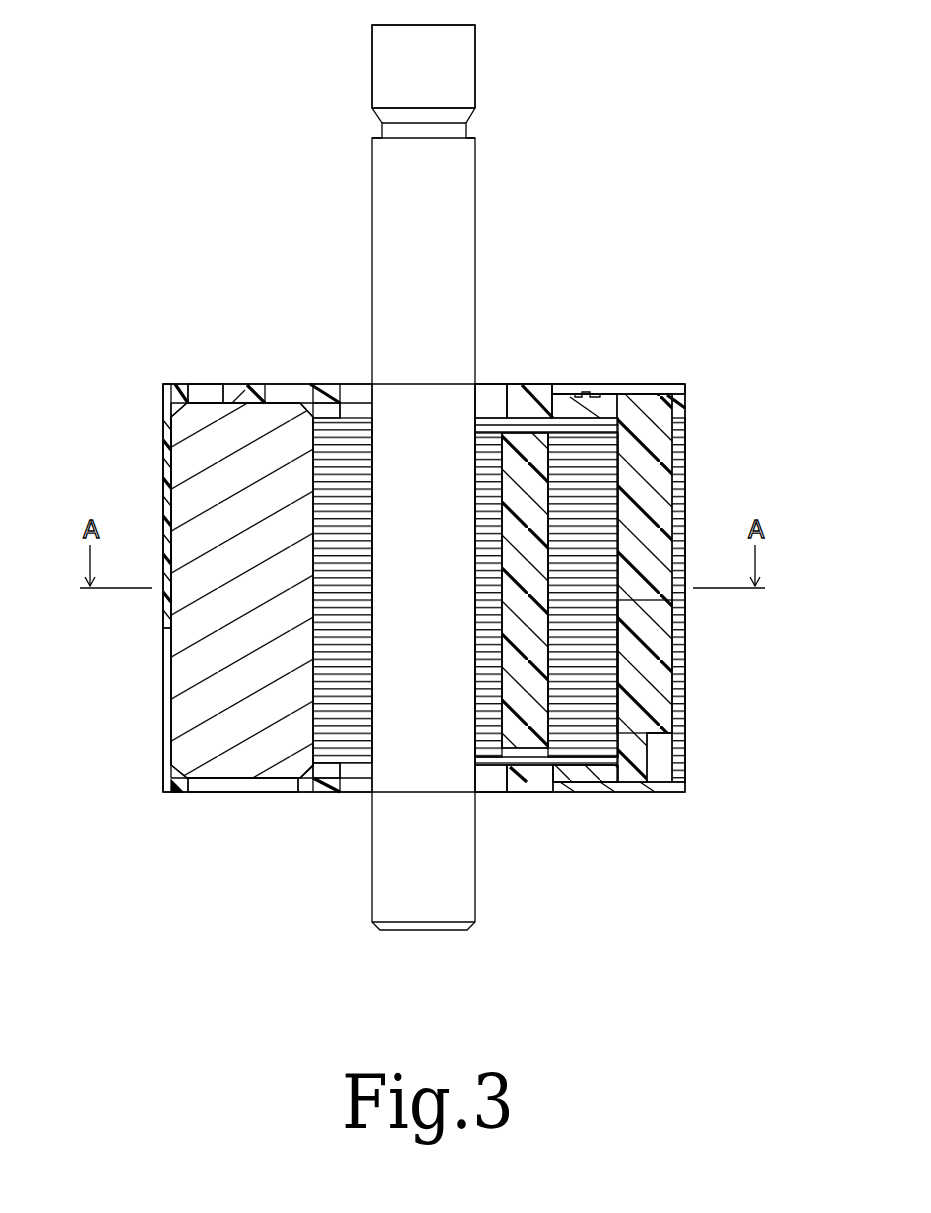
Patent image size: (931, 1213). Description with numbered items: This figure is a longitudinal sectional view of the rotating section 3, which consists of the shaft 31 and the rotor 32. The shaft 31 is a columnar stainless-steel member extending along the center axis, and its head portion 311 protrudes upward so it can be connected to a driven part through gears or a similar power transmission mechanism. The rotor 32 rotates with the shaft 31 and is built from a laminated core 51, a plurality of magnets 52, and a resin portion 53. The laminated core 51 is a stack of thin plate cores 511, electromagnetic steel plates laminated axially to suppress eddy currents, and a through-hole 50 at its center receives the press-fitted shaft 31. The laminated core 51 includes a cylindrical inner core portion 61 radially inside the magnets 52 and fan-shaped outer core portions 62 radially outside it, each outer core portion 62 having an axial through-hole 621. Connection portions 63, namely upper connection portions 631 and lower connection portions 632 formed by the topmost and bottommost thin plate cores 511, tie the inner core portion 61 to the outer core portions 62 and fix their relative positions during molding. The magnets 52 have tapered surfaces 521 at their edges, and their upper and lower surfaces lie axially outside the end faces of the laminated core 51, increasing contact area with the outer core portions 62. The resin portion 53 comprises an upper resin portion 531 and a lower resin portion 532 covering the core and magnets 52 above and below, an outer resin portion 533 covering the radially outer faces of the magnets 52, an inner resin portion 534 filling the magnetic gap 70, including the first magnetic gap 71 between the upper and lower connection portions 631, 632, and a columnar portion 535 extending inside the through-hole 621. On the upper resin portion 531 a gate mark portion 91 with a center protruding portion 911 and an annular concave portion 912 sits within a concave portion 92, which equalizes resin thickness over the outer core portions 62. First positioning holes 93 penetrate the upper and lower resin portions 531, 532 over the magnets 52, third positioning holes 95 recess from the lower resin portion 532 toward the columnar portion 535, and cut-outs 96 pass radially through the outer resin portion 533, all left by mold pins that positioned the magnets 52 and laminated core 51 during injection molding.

The rotating section 3 is at (236, 266).
The shaft 31 is at (492, 189).
The head portion 311 is at (455, 65).
The rotor 32 is at (143, 431).
The through-hole 50 is at (397, 744).
The laminated core 51 is at (493, 408).
The magnets 52 is at (250, 458).
The tapered surfaces 521 is at (318, 395).
The resin portion 53 is at (697, 404).
The upper resin portion 531 is at (283, 400).
The lower resin portion 532 is at (590, 773).
The outer resin portion 533 is at (168, 488).
The inner resin portion 534 is at (530, 612).
The columnar portion 535 is at (648, 518).
The inner core portion 61 is at (358, 455).
The outer core portions 62 is at (600, 460).
The through-hole 621 is at (654, 662).
The connection portions 63 is at (519, 767).
The upper connection portions 631 is at (526, 430).
The lower connection portions 632 is at (527, 760).
The magnetic gap 70 is at (762, 439).
The first magnetic gap 71 is at (530, 514).
The gate mark portion 91 is at (633, 281).
The center protruding portion 911 is at (580, 396).
The annular concave portion 912 is at (597, 396).
The concave portions 92 is at (659, 390).
The first positioning holes 93 is at (206, 385).
The third positioning holes 95 is at (659, 754).
The cut-outs 96 is at (161, 668).
The thin plate cores 511 is at (676, 712).